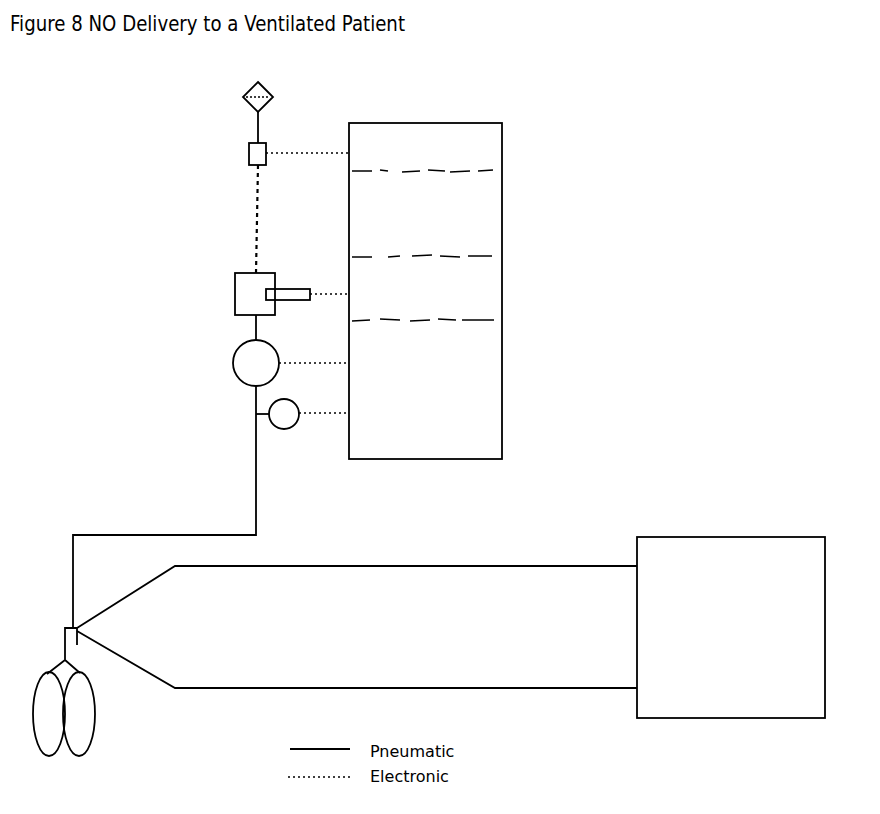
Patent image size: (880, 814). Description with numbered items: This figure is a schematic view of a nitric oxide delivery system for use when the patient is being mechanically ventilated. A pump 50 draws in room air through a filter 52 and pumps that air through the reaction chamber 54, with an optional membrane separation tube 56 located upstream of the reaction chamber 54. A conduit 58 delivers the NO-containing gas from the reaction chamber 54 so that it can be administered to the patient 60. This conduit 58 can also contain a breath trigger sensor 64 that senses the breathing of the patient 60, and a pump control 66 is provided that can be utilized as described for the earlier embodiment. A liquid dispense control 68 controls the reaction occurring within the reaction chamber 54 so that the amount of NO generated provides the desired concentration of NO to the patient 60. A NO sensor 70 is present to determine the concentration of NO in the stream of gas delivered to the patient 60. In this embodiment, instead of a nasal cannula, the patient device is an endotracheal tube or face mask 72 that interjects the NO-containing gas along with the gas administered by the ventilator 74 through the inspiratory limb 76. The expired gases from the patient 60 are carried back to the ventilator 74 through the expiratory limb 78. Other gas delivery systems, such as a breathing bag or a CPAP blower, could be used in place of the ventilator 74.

The pump 50 is at (266, 150).
The filter 52 is at (247, 93).
The reaction chamber 54 is at (250, 300).
The membrane separation tube 56 is at (256, 195).
The conduit 58 is at (256, 487).
The patient 60 is at (95, 725).
The breath trigger sensor 64 is at (282, 429).
The pump control 66 is at (490, 142).
The liquid dispense control 68 is at (502, 300).
The NO sensor 70 is at (238, 378).
The endotracheal tube or face mask 72 is at (65, 645).
The ventilator 74 is at (686, 537).
The inspiratory limb 76 is at (508, 566).
The expiratory limb 78 is at (503, 690).